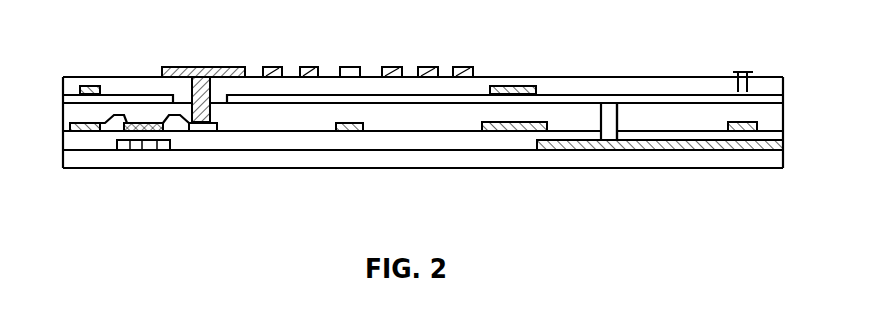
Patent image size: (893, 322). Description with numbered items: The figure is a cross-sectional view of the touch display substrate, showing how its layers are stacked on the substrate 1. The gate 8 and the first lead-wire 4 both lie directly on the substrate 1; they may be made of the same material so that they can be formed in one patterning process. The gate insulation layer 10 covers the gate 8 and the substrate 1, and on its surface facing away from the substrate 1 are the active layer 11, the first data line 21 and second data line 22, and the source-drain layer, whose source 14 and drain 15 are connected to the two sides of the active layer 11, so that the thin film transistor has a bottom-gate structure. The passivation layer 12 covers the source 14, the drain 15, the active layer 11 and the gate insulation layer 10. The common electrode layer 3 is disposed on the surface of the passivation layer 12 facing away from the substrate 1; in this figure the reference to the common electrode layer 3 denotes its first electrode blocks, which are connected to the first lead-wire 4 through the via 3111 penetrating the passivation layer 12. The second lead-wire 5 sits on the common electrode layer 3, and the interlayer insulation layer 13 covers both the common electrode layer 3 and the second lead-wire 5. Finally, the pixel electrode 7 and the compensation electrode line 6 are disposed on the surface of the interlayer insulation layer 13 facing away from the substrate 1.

The substrate 1 is at (292, 157).
The gate insulation layer 10 is at (422, 140).
The interlayer insulation layer 13 is at (575, 85).
The common electrode layer 3 is at (655, 98).
The passivation layer 12 is at (692, 120).
The via 3111 is at (610, 122).
The first lead-wire 4 is at (585, 143).
The drain 15 is at (200, 128).
The source 14 is at (113, 125).
The active layer 11 is at (142, 123).
The gate 8 is at (145, 145).
The second lead-wire 5 is at (93, 86).
The first data line 21 is at (63, 131).
The second data line 22 is at (355, 124).
The pixel electrode 7 is at (273, 67).
The compensation electrode line 6 is at (347, 67).